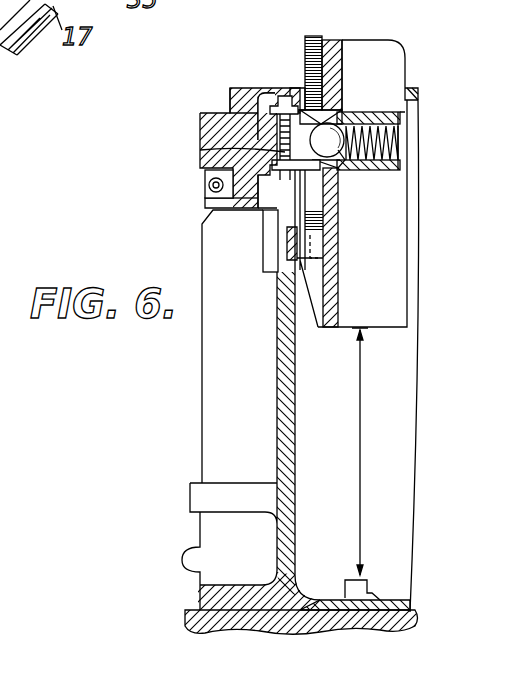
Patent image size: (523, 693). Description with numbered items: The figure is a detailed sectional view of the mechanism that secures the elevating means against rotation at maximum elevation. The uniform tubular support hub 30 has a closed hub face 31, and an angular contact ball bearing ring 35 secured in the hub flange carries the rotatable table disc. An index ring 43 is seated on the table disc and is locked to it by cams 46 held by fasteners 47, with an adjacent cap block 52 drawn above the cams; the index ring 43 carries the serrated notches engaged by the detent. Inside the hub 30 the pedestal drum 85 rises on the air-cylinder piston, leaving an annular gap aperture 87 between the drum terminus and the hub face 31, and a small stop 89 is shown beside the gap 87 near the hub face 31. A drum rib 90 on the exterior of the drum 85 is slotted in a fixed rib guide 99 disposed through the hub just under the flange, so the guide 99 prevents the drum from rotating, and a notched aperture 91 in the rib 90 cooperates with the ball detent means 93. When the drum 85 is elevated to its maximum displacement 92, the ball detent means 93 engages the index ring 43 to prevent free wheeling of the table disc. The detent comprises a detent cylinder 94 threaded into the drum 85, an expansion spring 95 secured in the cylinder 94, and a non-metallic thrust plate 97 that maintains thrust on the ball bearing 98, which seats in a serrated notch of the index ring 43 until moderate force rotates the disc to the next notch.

The tubular support hub 30 is at (251, 344).
The closed hub face 31 is at (287, 597).
The angular contact ball bearing ring 35 is at (208, 190).
The index ring 43 is at (270, 128).
The cam 46 is at (262, 207).
The fastener 47 is at (281, 98).
The cap block 52 is at (252, 88).
The pedestal drum 85 is at (333, 43).
The annular gap aperture 87 is at (345, 583).
The stop 89 is at (320, 600).
The drum rib 90 is at (308, 60).
The notched aperture 91 is at (200, 150).
The maximum displacement 92 is at (360, 430).
The ball detent means 93 is at (385, 100).
The detent cylinder 94 is at (383, 167).
The expansion spring 95 is at (380, 138).
The non-metallic thrust plate 97 is at (345, 177).
The ball bearing 98 is at (336, 118).
The rib guide 99 is at (270, 250).